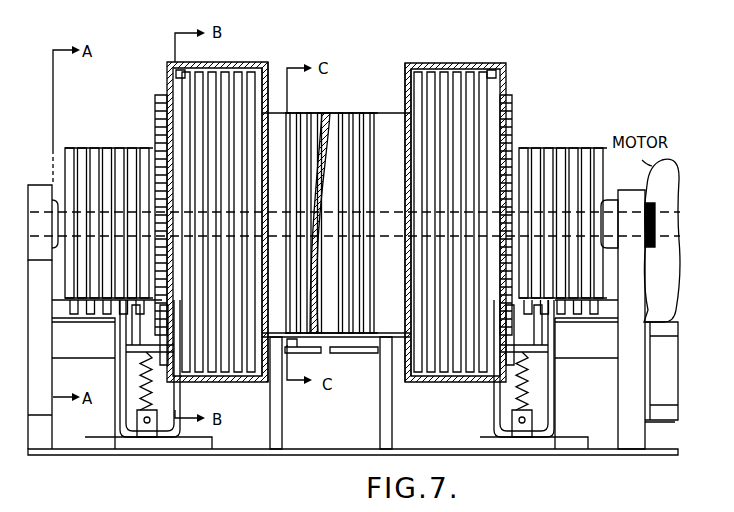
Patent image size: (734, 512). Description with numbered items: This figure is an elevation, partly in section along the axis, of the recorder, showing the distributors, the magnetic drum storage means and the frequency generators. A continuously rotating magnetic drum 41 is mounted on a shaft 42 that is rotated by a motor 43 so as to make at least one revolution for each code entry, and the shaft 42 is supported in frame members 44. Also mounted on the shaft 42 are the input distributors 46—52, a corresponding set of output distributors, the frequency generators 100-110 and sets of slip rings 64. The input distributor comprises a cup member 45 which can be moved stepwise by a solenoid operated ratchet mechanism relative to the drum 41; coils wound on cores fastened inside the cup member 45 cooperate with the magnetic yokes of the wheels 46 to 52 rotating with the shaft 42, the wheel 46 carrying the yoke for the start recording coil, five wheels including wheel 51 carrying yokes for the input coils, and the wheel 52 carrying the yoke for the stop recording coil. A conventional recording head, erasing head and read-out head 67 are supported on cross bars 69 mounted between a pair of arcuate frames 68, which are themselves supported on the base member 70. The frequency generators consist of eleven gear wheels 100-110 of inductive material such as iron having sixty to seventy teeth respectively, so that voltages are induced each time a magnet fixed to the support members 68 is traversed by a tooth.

The magnetic drum 41 is at (272, 122).
The shaft 42 is at (37, 200).
The motor 43 is at (653, 168).
The frame members 44 is at (37, 404).
The cup member 45 is at (170, 68).
The wheel 46 is at (194, 372).
The wheel 51 is at (255, 380).
The wheel 52 is at (260, 82).
The set of slip rings 64 is at (106, 148).
The read-out head 67 is at (292, 352).
The arcuate frames 68 is at (274, 424).
The cross bars 69 is at (350, 353).
The base member 70 is at (424, 449).
The gear wheels 100-110 is at (331, 211).